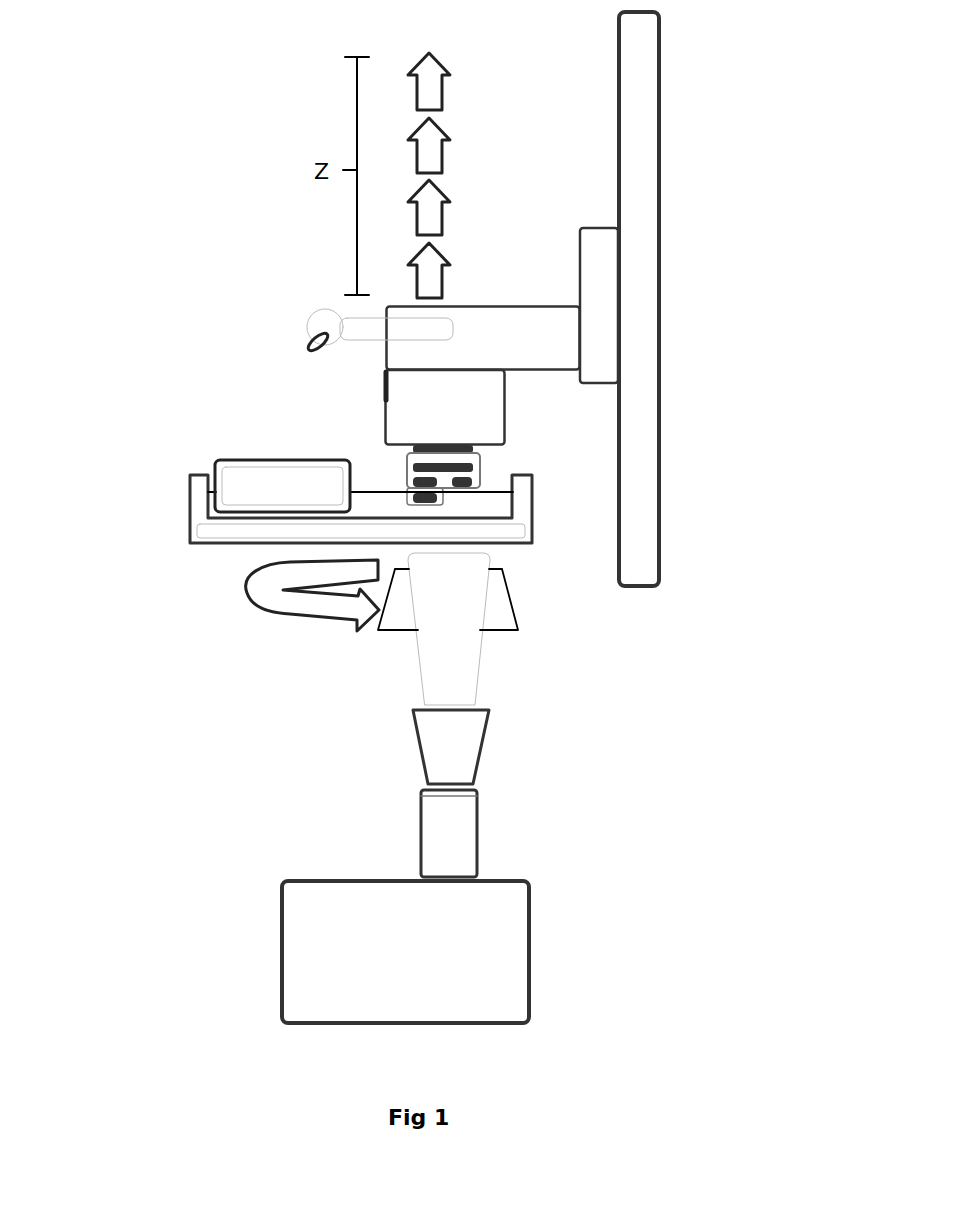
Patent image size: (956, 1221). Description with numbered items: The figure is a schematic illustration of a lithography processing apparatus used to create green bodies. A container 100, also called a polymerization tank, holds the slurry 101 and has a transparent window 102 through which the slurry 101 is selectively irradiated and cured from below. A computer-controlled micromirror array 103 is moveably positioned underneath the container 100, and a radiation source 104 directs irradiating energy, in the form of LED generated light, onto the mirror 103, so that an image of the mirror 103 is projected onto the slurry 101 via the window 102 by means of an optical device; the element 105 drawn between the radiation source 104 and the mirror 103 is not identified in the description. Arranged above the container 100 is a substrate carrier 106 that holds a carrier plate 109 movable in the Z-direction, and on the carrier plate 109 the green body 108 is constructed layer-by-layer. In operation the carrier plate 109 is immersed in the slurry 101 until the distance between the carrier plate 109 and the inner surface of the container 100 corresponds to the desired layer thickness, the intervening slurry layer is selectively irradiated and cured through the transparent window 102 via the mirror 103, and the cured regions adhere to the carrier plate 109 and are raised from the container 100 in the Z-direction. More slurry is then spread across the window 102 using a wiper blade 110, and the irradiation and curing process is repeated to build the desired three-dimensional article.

The container 100 is at (305, 540).
The slurry 101 is at (487, 500).
The transparent window 102 is at (233, 530).
The micromirror array 103 is at (403, 605).
The radiation source 104 is at (523, 888).
The optical coupler 105 is at (482, 732).
The substrate carrier 106 is at (482, 302).
The green body 108 is at (482, 470).
The carrier plate 109 is at (383, 407).
The wiper blade 110 is at (240, 487).